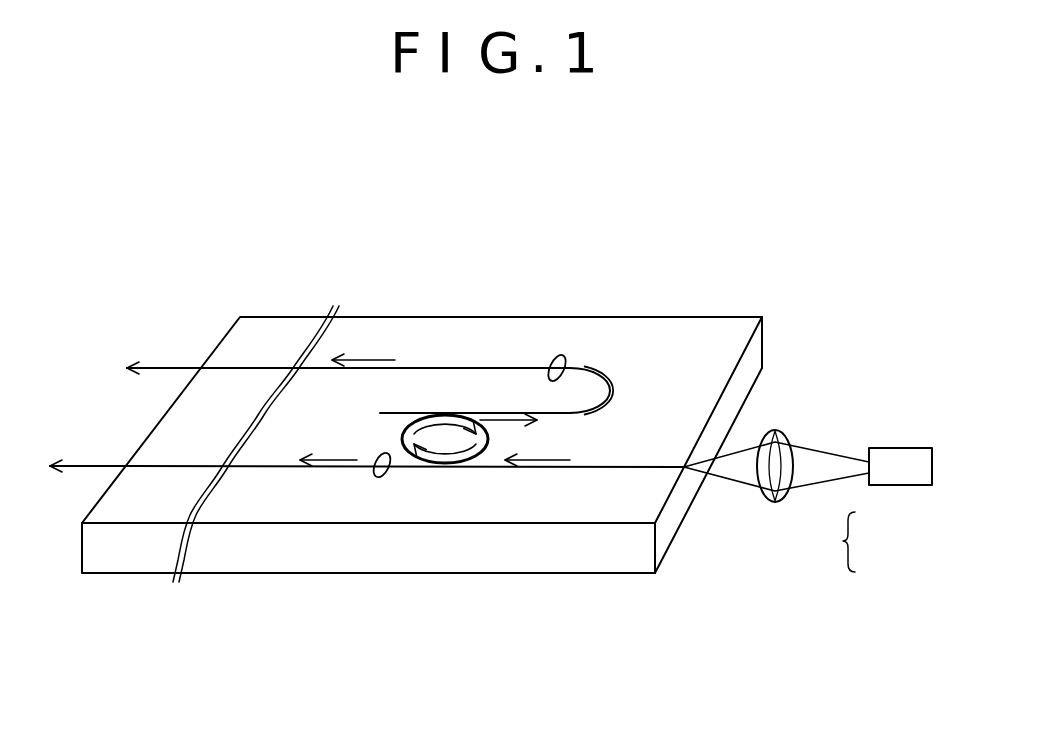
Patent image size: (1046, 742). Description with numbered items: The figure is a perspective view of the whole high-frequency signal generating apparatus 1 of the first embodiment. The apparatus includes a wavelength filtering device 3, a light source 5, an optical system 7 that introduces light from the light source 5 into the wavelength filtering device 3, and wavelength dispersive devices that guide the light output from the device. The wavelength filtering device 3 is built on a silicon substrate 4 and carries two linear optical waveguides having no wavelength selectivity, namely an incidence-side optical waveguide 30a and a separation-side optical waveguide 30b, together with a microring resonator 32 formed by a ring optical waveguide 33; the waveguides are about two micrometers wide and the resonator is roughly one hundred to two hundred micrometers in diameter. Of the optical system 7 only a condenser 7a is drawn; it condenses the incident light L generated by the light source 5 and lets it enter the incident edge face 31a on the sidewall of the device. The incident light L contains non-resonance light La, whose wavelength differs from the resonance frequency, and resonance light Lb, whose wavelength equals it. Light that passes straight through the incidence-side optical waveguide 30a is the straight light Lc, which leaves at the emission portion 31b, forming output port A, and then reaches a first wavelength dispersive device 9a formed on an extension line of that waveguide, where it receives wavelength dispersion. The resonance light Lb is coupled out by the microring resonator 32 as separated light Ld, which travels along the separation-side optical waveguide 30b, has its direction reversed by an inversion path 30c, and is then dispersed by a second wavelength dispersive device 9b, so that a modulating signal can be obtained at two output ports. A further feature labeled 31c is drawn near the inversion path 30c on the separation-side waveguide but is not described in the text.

The high-frequency signal generating apparatus 1 is at (422, 426).
The wavelength filtering device 3 is at (202, 640).
The silicon substrate 4 is at (687, 342).
The light source 5 is at (900, 448).
The optical system 7 is at (806, 498).
The condenser 7a is at (775, 430).
The first wavelength dispersive device 9a is at (240, 467).
The second wavelength dispersive device 9b is at (268, 368).
The incidence-side optical waveguide 30a is at (533, 467).
The separation-side optical waveguide 30b is at (440, 413).
The inversion path 30c is at (604, 378).
The incident edge face 31a is at (685, 467).
The emission portion 31b is at (380, 478).
The wavelength filter 31c is at (553, 355).
The microring resonator 32 is at (443, 442).
The ring optical waveguide 33 is at (487, 443).
The incident light L is at (812, 473).
The non-resonance light La is at (869, 542).
The resonance light Lb is at (881, 561).
The straight light Lc is at (336, 460).
The separated light Ld is at (513, 425).